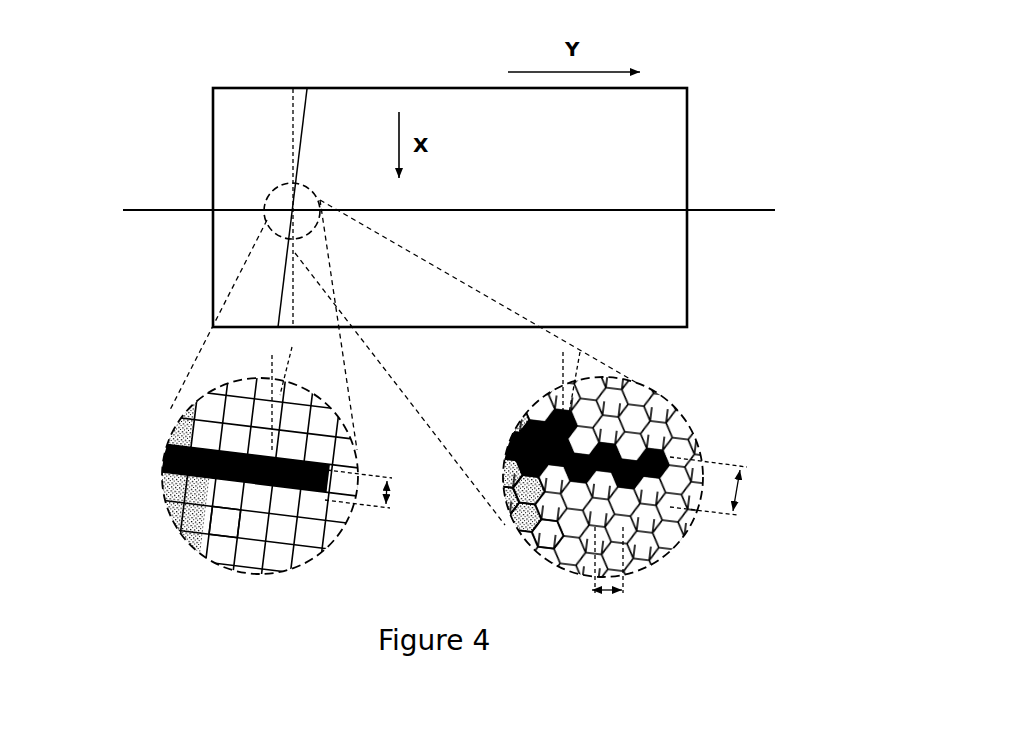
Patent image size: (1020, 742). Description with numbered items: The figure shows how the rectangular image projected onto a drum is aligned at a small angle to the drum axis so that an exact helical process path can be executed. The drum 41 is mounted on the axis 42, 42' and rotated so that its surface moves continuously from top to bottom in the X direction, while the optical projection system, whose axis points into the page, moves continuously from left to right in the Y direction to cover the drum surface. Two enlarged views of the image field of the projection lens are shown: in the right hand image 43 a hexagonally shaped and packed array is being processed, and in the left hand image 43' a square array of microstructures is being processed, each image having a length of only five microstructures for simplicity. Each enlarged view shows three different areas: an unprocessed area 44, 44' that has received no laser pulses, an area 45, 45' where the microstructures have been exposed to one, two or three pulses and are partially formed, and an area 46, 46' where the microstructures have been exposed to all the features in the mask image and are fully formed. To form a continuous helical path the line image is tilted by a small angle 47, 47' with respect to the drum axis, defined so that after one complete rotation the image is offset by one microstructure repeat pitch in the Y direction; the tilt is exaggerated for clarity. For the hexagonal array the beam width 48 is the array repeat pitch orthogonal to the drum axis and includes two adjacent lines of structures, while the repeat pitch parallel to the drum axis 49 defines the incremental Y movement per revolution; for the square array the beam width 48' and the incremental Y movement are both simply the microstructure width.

The drum 41 is at (692, 107).
The drum axis 42 is at (387, 265).
The drum axis 42' is at (732, 265).
The right hand image 43 is at (582, 447).
The left hand image 43' is at (245, 468).
The unprocessed area 44 is at (601, 476).
The unprocessed area 44' is at (260, 486).
The partially formed area 45 is at (547, 533).
The partially formed area 45' is at (225, 521).
The fully formed area 46 is at (519, 467).
The fully formed area 46' is at (186, 467).
The image tilt angle 47 is at (422, 232).
The image tilt angle 47' is at (214, 400).
The beam width 48 is at (760, 486).
The beam width 48' is at (389, 494).
The array repeat pitch parallel to the drum axis 49 is at (618, 587).